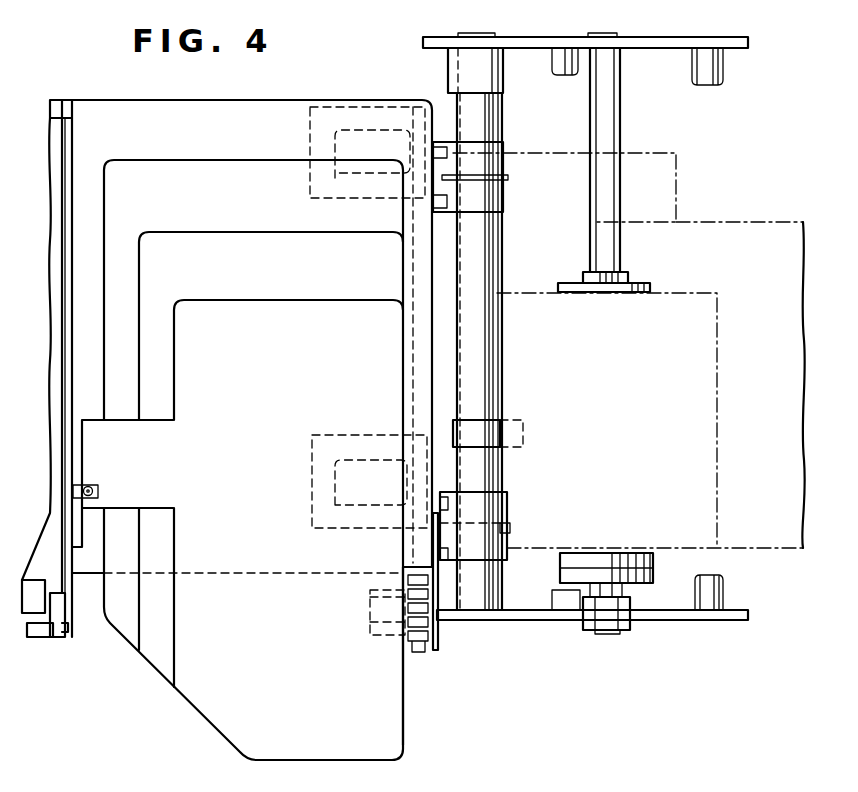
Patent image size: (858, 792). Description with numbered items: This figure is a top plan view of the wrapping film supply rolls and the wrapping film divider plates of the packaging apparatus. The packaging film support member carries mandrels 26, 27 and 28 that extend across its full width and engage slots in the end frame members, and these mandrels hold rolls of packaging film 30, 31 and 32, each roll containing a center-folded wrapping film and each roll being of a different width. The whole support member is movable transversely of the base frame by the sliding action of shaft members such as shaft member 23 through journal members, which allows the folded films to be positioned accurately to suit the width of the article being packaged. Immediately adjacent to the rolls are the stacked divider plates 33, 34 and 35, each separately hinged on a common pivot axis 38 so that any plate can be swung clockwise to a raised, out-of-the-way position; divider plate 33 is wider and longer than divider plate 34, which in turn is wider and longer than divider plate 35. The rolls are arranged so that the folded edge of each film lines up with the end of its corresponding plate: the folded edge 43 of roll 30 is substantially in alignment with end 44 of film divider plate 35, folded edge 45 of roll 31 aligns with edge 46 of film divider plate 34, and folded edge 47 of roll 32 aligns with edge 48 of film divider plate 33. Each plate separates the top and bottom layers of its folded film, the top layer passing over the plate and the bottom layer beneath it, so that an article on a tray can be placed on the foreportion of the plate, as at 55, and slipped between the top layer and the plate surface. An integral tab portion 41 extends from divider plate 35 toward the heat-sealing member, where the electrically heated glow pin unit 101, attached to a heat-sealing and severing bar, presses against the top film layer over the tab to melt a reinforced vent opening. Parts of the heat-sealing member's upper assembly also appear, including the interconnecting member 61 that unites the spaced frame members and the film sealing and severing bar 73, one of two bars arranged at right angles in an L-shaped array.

The shaft member 23 is at (480, 263).
The mandrel 26 is at (607, 87).
The mandrel 27 is at (718, 76).
The mandrel 28 is at (560, 76).
The roll of packaging film 30 is at (633, 418).
The roll of packaging film 31 is at (745, 398).
The roll of packaging film 32 is at (630, 194).
The divider plate 33 is at (215, 204).
The divider plate 34 is at (257, 278).
The divider plate 35 is at (280, 401).
The common pivot axis 38 is at (420, 652).
The integral tab portion 41 is at (125, 479).
The folded edge 43 is at (689, 290).
The end of film divider plate 44 is at (367, 296).
The folded edge 45 is at (732, 222).
The end of film divider plate 46 is at (365, 226).
The folded edge 47 is at (652, 152).
The end of film divider plate 48 is at (278, 156).
The foreportion of divider plate 55 is at (285, 686).
The interconnecting member 61 is at (45, 638).
The film sealing and severing bar 73 is at (27, 622).
The glow pin unit 101 is at (90, 485).